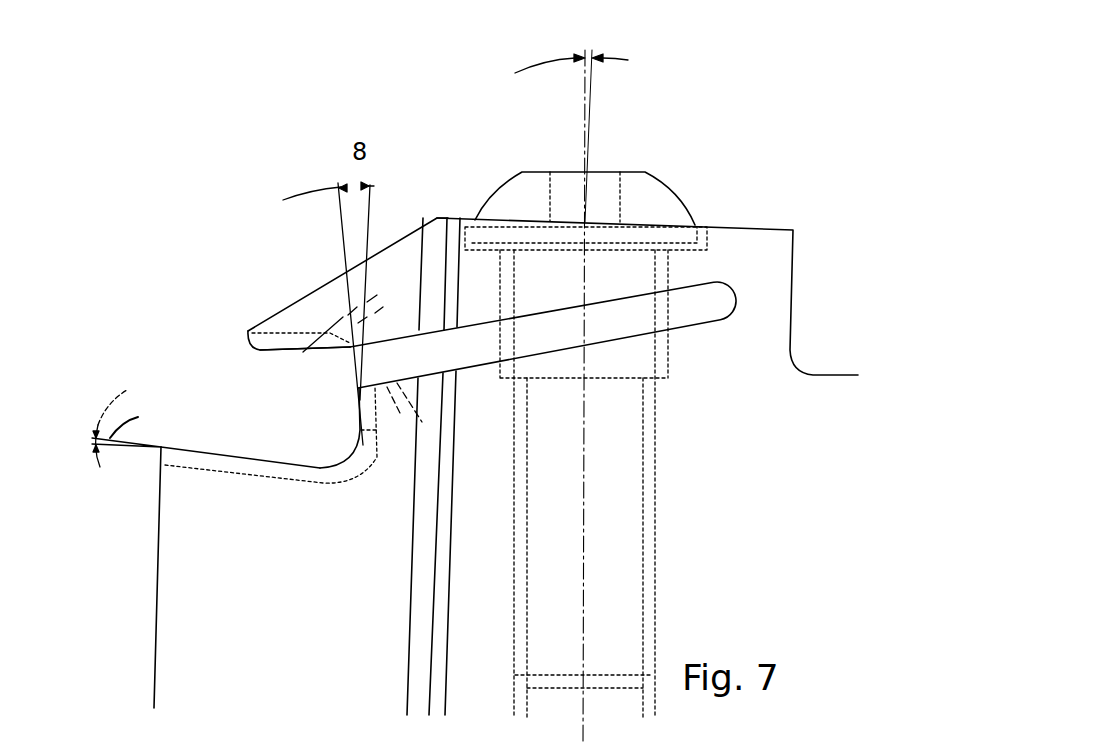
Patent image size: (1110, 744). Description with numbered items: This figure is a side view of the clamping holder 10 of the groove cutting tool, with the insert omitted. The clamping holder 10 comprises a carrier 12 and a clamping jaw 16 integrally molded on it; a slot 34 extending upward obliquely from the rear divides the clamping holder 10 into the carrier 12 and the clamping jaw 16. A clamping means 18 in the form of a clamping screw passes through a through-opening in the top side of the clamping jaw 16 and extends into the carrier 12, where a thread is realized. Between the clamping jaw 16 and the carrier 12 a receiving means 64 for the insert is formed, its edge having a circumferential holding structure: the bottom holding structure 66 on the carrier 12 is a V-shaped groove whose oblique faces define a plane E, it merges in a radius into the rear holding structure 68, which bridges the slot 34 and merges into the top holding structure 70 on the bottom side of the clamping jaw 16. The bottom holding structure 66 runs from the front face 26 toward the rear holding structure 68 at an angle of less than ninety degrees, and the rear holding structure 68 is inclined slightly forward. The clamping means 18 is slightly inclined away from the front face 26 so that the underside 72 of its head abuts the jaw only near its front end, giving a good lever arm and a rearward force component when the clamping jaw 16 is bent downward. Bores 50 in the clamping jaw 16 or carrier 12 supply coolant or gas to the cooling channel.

The clamping holder 10 is at (187, 640).
The carrier 12 is at (180, 553).
The clamping jaw 16 is at (410, 248).
The clamping means 18 is at (645, 185).
The front face 26 is at (160, 507).
The slot 34 is at (476, 345).
The bores 50 is at (342, 317).
The receiving means 64 is at (265, 397).
The bottom holding structure 66 is at (243, 466).
The rear holding structure 68 is at (362, 443).
The top holding structure 70 is at (280, 348).
The underside of the head 72 is at (488, 243).